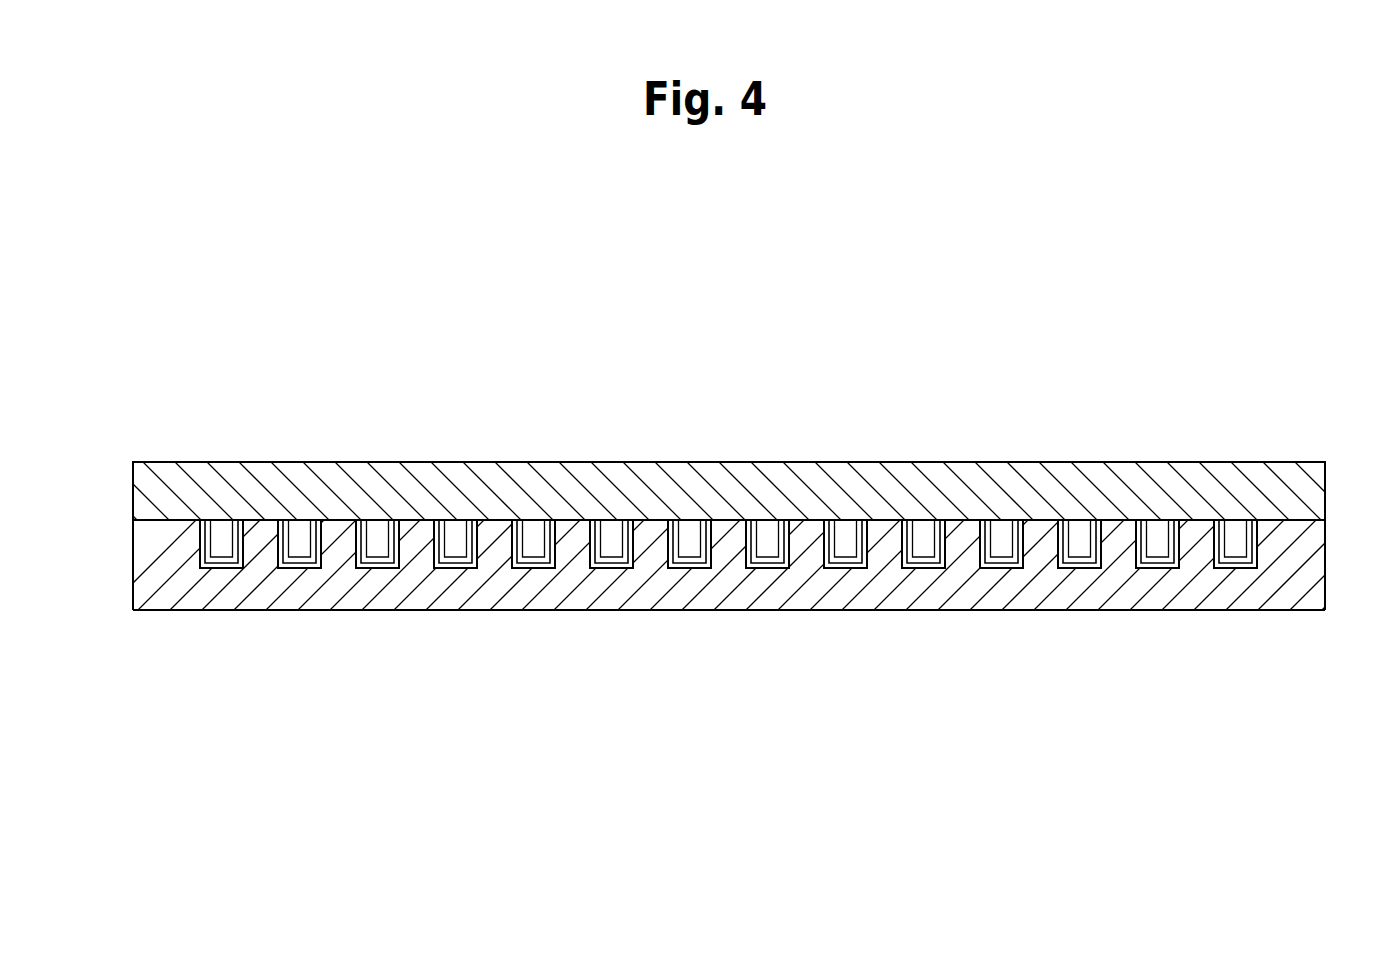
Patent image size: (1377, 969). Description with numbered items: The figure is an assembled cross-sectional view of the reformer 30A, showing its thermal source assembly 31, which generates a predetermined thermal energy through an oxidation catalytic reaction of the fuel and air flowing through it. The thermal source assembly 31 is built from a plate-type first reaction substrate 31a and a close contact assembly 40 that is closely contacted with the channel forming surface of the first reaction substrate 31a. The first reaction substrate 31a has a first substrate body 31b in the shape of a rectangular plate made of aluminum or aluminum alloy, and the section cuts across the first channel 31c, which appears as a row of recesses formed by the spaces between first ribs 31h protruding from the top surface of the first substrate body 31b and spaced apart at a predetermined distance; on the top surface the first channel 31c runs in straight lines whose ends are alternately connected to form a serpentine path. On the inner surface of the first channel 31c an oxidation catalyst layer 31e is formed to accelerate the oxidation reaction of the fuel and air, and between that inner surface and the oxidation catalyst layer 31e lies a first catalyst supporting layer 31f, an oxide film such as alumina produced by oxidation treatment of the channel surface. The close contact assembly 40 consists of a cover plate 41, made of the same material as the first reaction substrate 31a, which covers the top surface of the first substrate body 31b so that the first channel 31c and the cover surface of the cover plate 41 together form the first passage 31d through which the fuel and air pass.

The reformer 30A is at (1294, 247).
The thermal source assembly 31 is at (1263, 415).
The first reaction substrate 31a is at (656, 624).
The first substrate body 31b is at (285, 611).
The first channel 31c is at (999, 570).
The first passage 31d is at (456, 570).
The oxidation catalyst layer 31e is at (1158, 560).
The first catalyst supporting layer 31f is at (1077, 570).
The first ribs 31h is at (884, 520).
The close contact assembly 40 is at (709, 469).
The cover plate 41 is at (334, 462).